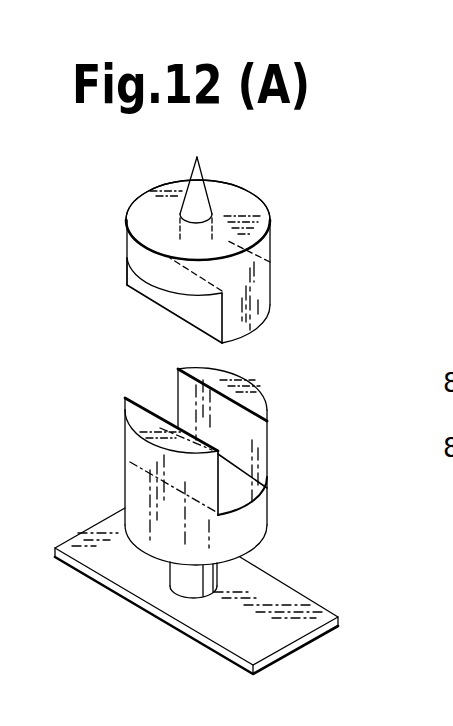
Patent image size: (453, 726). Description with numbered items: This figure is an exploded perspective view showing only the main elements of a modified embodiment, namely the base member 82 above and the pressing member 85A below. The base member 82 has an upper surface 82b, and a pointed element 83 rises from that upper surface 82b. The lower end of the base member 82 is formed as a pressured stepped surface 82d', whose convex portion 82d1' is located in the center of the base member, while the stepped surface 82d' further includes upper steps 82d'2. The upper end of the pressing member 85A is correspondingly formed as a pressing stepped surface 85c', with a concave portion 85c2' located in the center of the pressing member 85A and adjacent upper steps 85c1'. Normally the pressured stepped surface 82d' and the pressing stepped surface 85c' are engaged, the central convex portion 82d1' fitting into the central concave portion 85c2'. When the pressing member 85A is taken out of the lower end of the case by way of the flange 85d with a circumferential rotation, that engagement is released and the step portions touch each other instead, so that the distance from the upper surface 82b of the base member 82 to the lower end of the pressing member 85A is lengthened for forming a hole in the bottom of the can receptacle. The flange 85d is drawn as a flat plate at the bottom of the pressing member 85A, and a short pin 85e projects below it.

The base member 82 is at (282, 208).
The upper surface of base member 82b is at (148, 210).
The conical pin 83 is at (212, 198).
The pressured stepped surface 82d' is at (136, 274).
The upper steps of pressured stepped surface 82d'2 is at (222, 294).
The convex portion of pressured stepped surface 82d1' is at (283, 314).
The pressing member 85A is at (273, 521).
The pressing stepped surface 85c' is at (131, 431).
The upper steps of pressing stepped surface 85c1' is at (209, 411).
The concave portion of pressing stepped surface 85c2' is at (289, 480).
The flange 85d is at (297, 612).
The mounting pin 85e is at (190, 583).